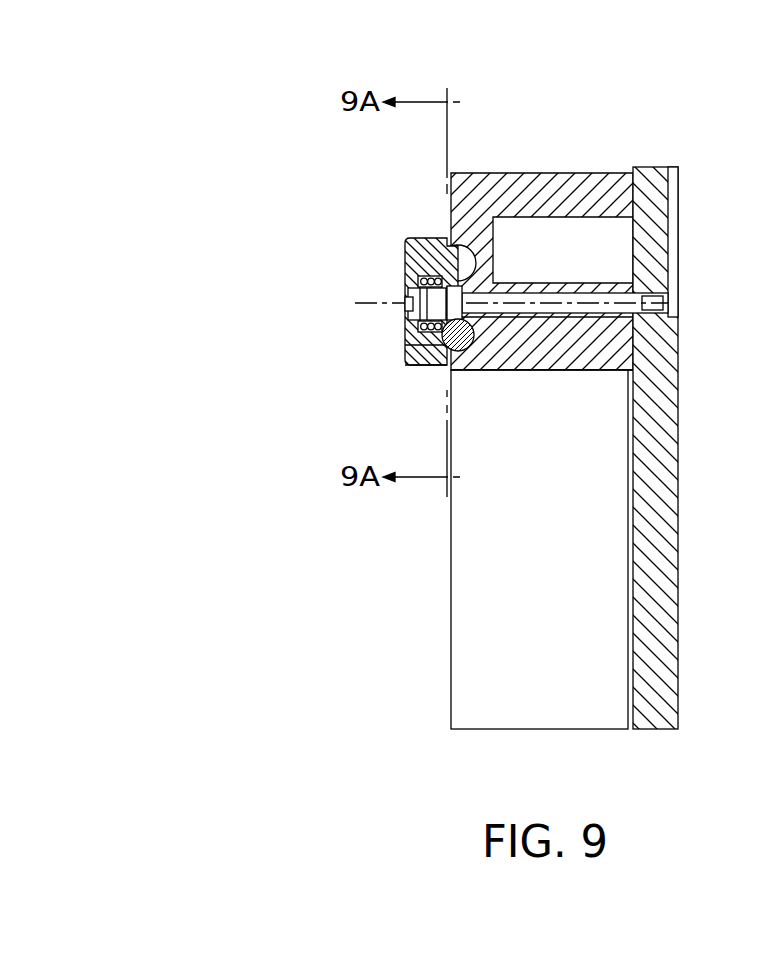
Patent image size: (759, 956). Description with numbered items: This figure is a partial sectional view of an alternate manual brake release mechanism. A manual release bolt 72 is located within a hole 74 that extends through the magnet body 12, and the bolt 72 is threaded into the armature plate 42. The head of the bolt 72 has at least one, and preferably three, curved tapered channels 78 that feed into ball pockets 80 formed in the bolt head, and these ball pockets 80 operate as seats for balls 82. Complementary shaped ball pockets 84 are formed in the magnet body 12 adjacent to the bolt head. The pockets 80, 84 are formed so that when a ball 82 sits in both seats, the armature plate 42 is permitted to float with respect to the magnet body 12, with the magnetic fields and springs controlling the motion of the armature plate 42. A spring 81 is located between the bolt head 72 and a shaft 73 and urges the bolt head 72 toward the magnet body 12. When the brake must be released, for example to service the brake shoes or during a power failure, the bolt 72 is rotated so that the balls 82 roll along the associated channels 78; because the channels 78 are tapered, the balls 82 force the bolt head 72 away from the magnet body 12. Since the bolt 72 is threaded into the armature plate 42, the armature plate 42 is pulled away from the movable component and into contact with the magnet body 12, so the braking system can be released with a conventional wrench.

The magnet body 12 is at (528, 172).
The armature plate 42 is at (660, 488).
The manual release bolt 72 is at (415, 366).
The shaft 73 is at (523, 302).
The hole 74 is at (562, 322).
The curved tapered channels 78 is at (420, 330).
The ball pockets 80 is at (414, 340).
The spring 81 is at (405, 257).
The balls 82 is at (462, 354).
The ball pockets 84 is at (464, 242).